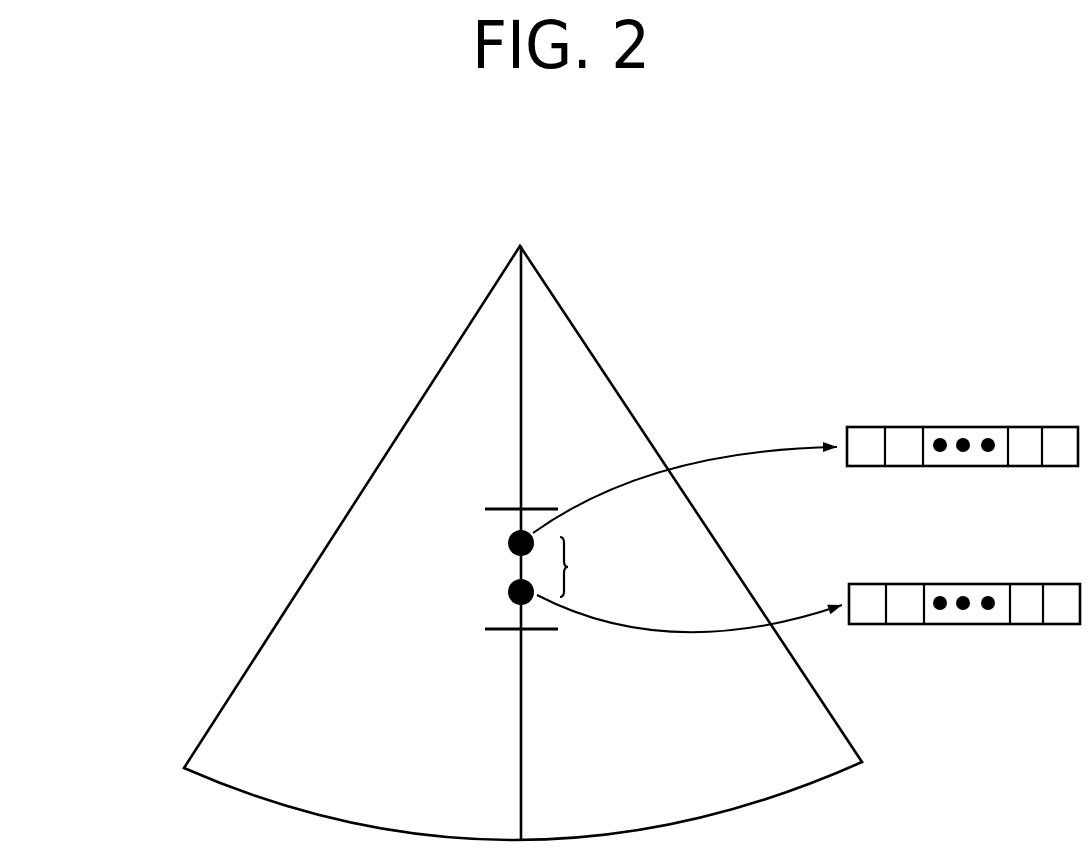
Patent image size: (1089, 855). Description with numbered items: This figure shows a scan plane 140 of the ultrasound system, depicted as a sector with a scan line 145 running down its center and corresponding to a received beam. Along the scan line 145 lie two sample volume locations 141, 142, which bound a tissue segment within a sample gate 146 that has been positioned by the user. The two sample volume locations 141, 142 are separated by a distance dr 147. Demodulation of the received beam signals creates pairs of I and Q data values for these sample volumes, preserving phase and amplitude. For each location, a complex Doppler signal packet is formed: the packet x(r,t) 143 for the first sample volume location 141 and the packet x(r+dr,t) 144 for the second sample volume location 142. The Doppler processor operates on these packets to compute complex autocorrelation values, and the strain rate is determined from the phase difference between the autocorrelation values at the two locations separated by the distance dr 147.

The scan plane 140 is at (318, 520).
The sample volume location 141 is at (507, 540).
The sample volume location 142 is at (507, 590).
The complex Doppler signal packet x(r,t) 143 is at (912, 417).
The complex Doppler signal packet x(r+dr,t) 144 is at (1020, 633).
The scan line 145 is at (520, 342).
The sample gate 146 is at (438, 507).
The distance dr 147 is at (591, 567).